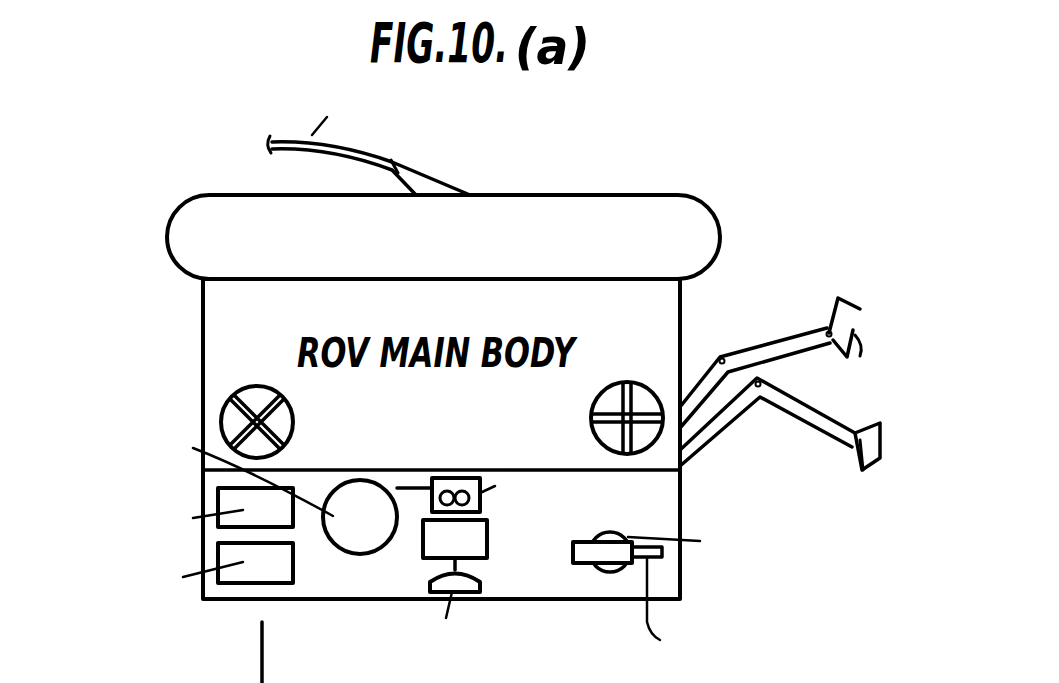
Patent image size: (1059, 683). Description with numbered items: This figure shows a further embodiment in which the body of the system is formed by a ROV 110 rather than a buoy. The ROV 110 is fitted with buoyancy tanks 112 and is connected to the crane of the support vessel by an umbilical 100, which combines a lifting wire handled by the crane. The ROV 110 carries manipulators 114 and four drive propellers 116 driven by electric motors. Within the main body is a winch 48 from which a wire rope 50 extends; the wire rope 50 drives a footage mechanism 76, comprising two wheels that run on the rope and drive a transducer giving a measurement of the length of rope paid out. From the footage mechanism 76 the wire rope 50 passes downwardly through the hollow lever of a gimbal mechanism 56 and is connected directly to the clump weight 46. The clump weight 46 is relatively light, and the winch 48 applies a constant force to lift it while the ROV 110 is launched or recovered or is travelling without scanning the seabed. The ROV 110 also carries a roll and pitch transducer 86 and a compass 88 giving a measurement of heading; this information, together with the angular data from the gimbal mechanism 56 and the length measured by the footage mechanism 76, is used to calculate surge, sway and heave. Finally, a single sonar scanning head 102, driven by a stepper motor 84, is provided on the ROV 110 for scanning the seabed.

The umbilical 100 is at (328, 147).
The ROV 110 is at (672, 198).
The buoyancy tanks 112 is at (285, 251).
The drive propellers 116 is at (262, 392).
The compass 88 is at (275, 497).
The roll and pitch transducer 86 is at (275, 567).
The winch 48 is at (362, 490).
The wire rope 50 is at (410, 487).
The footage mechanism 76 is at (473, 478).
The gimbal mechanism 56 is at (487, 540).
The clump weight 46 is at (470, 582).
The stepper motor 84 is at (608, 532).
The sonar scanning head 102 is at (657, 560).
The manipulators 114 is at (870, 424).